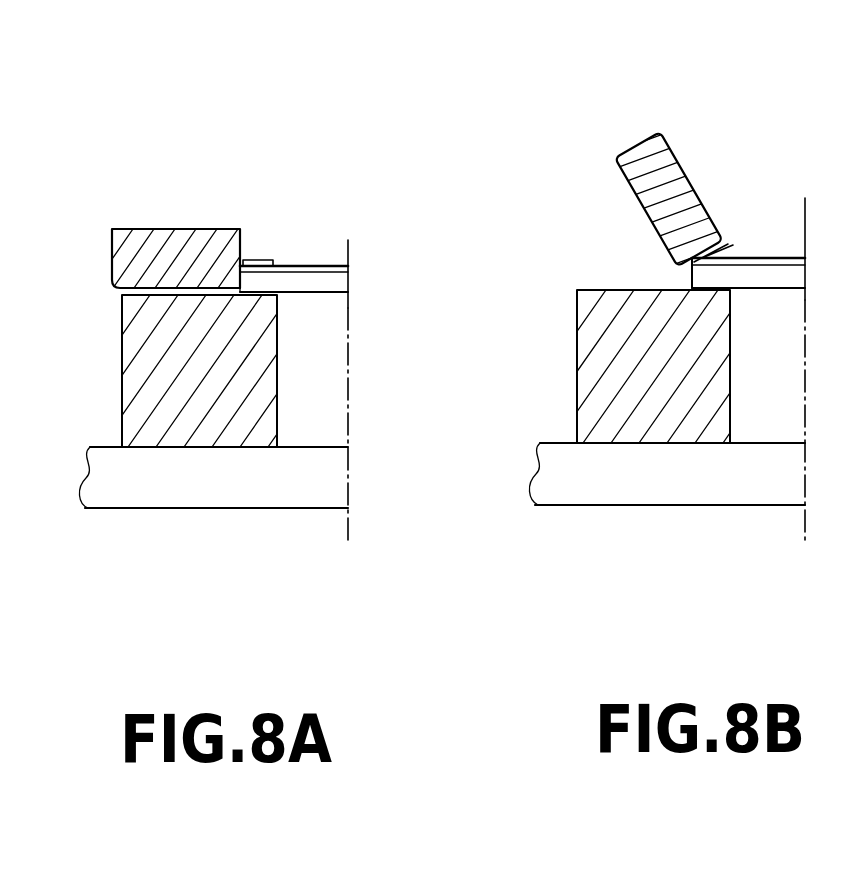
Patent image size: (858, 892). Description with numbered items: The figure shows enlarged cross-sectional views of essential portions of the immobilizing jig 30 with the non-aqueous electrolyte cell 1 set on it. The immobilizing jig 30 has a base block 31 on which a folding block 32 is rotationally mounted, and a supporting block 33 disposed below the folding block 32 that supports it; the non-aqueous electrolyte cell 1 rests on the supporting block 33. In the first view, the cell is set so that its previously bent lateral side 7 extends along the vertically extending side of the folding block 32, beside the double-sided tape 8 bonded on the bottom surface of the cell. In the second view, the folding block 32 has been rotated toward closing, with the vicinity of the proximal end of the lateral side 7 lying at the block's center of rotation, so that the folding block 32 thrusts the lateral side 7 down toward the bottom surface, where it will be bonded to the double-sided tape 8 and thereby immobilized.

In FIG. 8A, the non-aqueous electrolyte cell 1 is at (302, 263).
In FIG. 8B, the non-aqueous electrolyte cell 1 is at (764, 258).
In FIG. 8A, the lateral side 7 is at (243, 258).
In FIG. 8B, the lateral side 7 is at (727, 250).
In FIG. 8A, the double-sided tape 8 is at (262, 258).
In FIG. 8B, the double-sided tape 8 is at (733, 257).
In FIG. 8A, the immobilizing jig 30 is at (282, 518).
In FIG. 8B, the immobilizing jig 30 is at (720, 513).
In FIG. 8A, the base block 31 is at (142, 503).
In FIG. 8B, the base block 31 is at (582, 502).
In FIG. 8A, the folding block 32 is at (147, 236).
In FIG. 8B, the folding block 32 is at (647, 198).
In FIG. 8A, the supporting block 33 is at (132, 363).
In FIG. 8B, the supporting block 33 is at (582, 372).